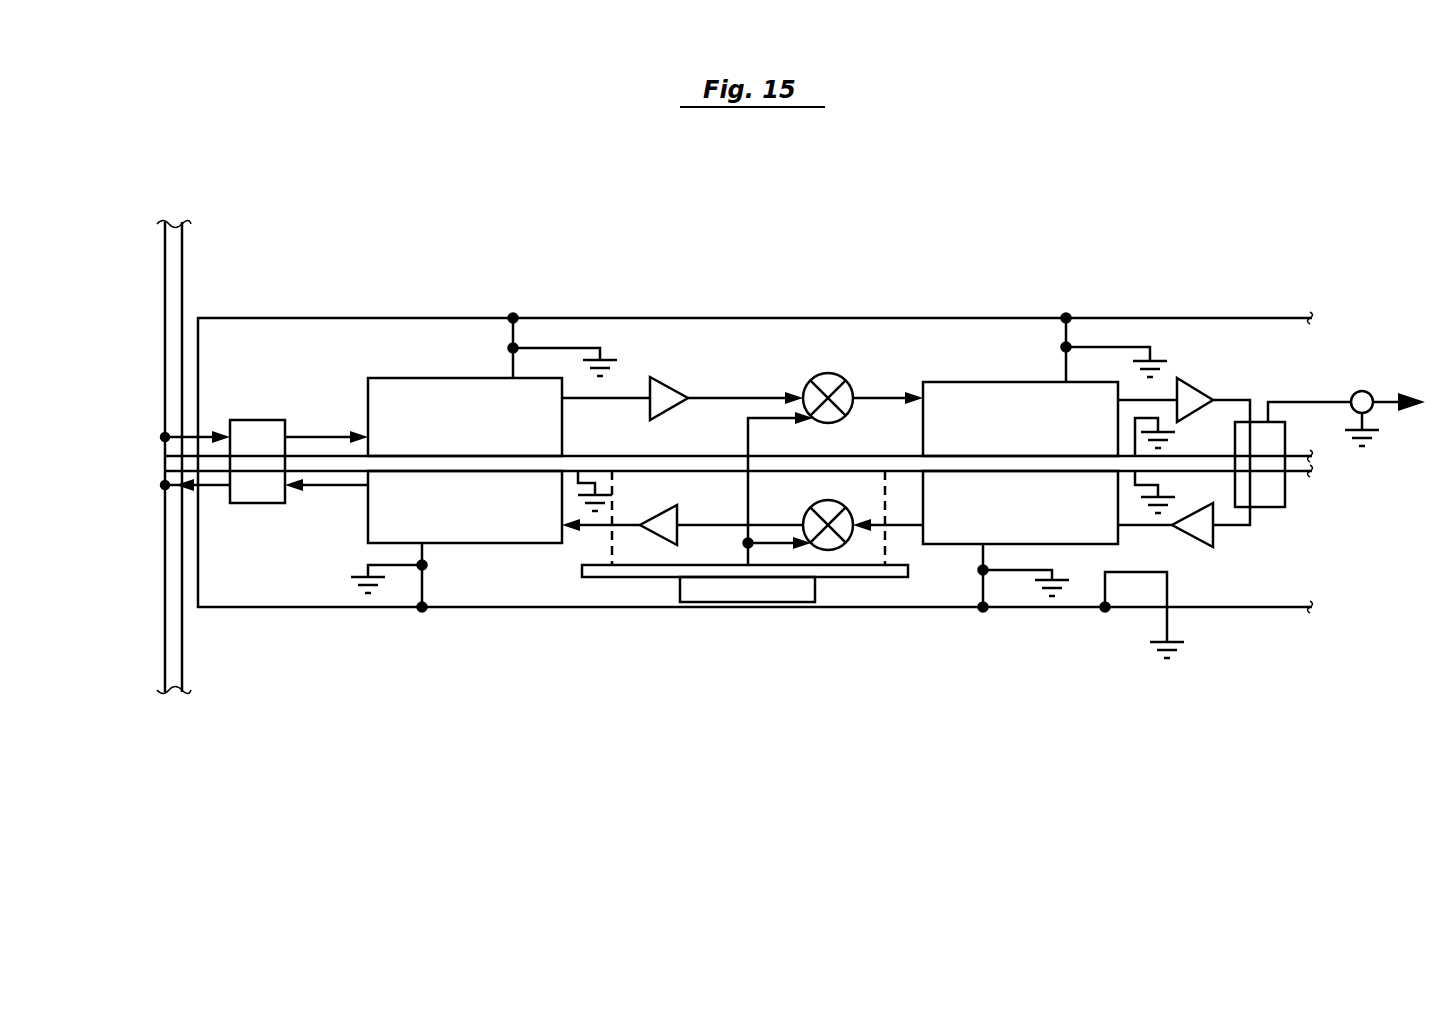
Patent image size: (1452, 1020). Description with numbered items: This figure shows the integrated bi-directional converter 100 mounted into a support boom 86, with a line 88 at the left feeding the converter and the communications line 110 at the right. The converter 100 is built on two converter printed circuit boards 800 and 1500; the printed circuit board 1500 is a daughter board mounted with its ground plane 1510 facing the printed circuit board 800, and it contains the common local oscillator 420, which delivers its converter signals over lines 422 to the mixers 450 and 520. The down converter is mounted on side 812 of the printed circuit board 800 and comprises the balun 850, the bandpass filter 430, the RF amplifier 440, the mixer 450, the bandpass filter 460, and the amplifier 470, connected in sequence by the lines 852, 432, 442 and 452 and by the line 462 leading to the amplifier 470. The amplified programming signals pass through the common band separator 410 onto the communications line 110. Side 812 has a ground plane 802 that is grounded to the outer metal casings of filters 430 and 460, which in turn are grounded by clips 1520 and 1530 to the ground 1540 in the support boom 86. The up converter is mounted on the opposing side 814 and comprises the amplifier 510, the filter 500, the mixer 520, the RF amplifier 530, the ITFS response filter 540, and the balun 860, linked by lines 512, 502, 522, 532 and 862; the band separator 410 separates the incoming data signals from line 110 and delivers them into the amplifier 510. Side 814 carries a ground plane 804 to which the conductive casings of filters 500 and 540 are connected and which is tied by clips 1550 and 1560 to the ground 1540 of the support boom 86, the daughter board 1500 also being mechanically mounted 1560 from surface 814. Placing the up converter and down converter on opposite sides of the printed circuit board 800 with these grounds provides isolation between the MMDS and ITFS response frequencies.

The data bus 88 is at (136, 384).
The support boom 86 is at (645, 318).
The bi-directional converter 100 is at (994, 343).
The communications line 110 is at (1386, 400).
The printed circuit board 800 is at (585, 456).
The ground plane 802 is at (340, 456).
The ground plane 804 is at (335, 471).
The balun 850 is at (258, 420).
The input line 852 is at (312, 437).
The balun 860 is at (262, 503).
The receive line 862 is at (308, 487).
The bandpass filter 430 is at (490, 428).
The modulator output line 432 is at (616, 397).
The RF amplifier 440 is at (670, 396).
The amplifier output line 442 is at (735, 396).
The mixer 450 is at (842, 374).
The mixer output line 452 is at (912, 395).
The bandpass filter 460 is at (1045, 427).
The filter output line 462 is at (1175, 392).
The amplifier 470 is at (1190, 385).
The band separator 410 is at (1268, 440).
The local oscillator 420 is at (725, 590).
The lines 422 is at (748, 432).
The bandpass filter 500 is at (1045, 518).
The filter output line 502 is at (912, 547).
The amplifier 510 is at (1195, 542).
The amplifier output line 512 is at (1167, 528).
The mixer 520 is at (820, 503).
The mixer output line 522 is at (736, 530).
The RF amplifier 530 is at (665, 505).
The amplifier output line 532 is at (620, 524).
The ITFS response bandpass filter 540 is at (490, 520).
The side 812 is at (840, 456).
The side 814 is at (836, 474).
The printed circuit board 1500 is at (890, 572).
The ground plane 1510 is at (640, 553).
The clip 1520 is at (558, 348).
The clip 1530 is at (1110, 347).
The ground 1540 is at (1170, 625).
The clip 1550 is at (424, 609).
The clip 1560 is at (985, 610).